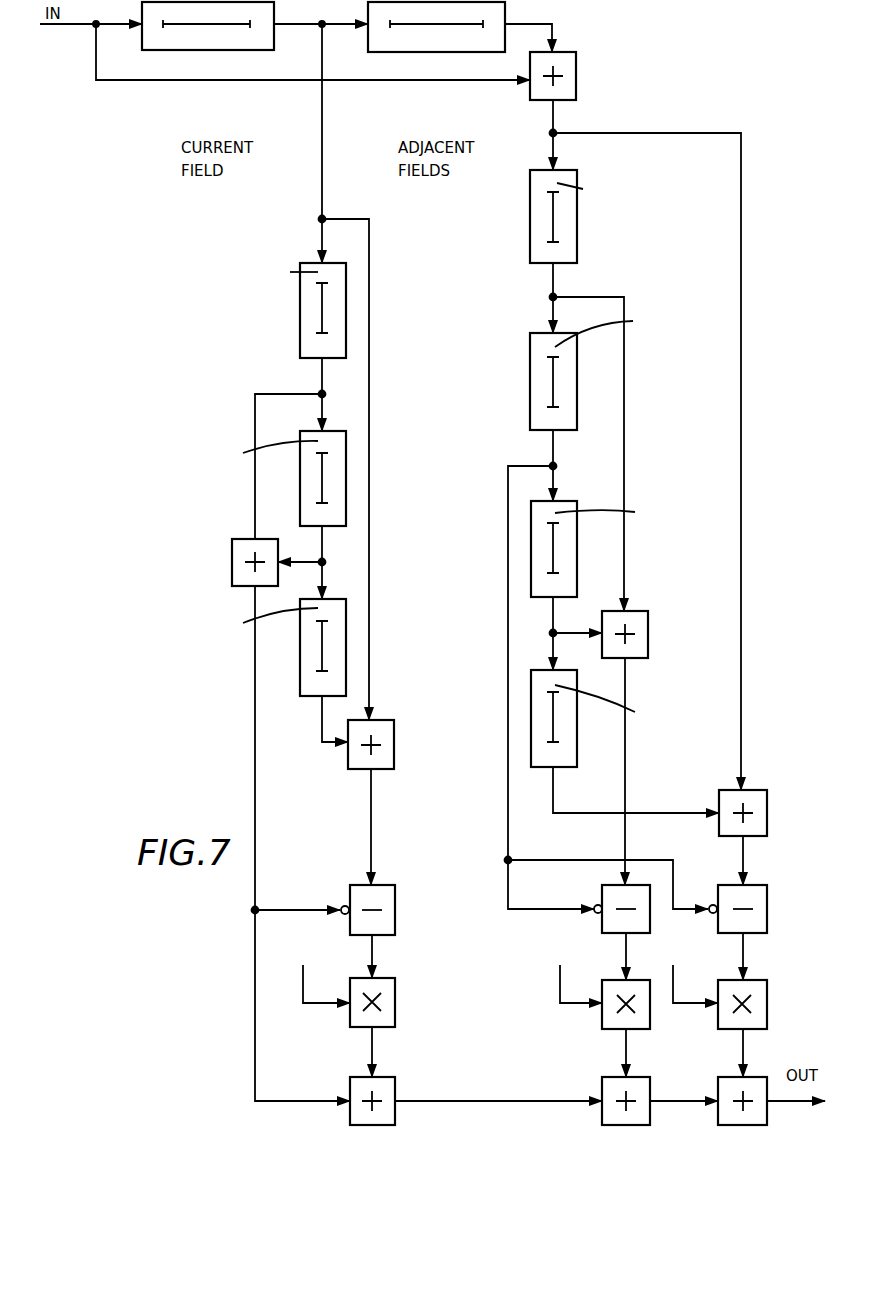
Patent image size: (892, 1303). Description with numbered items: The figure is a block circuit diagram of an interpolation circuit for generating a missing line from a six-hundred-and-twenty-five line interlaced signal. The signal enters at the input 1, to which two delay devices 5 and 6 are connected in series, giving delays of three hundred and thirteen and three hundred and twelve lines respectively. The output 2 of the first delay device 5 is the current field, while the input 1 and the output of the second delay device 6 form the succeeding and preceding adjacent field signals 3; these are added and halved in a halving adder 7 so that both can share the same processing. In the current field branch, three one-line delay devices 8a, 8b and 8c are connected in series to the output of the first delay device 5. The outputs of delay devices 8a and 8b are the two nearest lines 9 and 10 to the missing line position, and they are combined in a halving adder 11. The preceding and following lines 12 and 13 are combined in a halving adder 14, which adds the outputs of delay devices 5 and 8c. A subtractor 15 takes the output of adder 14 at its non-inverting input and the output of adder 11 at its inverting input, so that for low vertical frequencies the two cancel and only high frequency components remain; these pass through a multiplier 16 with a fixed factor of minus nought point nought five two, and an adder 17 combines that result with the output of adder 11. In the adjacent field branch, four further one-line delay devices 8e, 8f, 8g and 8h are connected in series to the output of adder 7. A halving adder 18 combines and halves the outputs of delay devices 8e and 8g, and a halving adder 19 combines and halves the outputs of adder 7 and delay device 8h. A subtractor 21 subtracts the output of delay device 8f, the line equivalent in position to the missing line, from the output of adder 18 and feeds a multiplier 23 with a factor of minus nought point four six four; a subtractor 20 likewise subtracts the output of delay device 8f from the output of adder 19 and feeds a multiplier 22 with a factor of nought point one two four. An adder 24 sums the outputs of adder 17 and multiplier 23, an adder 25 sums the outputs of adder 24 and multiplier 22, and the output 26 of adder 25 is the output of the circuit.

The input 1 is at (84, 30).
The output of the first delay device 2 is at (318, 155).
The adjacent field signals 3 is at (522, 32).
The first delay device 5 is at (160, 52).
The second delay device 6 is at (410, 52).
The halving adder 7 is at (578, 70).
The one-line delay device 8a is at (300, 308).
The one-line delay device 8b is at (300, 485).
The one-line delay device 8c is at (300, 672).
The one-line delay device 8e is at (578, 243).
The one-line delay device 8f is at (578, 390).
The one-line delay device 8g is at (578, 567).
The one-line delay device 8h is at (578, 760).
The nearest line 9 is at (322, 369).
The nearest line 10 is at (325, 552).
The halving adder 11 is at (231, 566).
The preceding line 12 is at (372, 240).
The following line 13 is at (318, 708).
The halving adder 14 is at (348, 762).
The subtractor 15 is at (350, 885).
The multiplier 16 is at (350, 1018).
The adder 17 is at (350, 1122).
The halving adder 18 is at (650, 632).
The halving adder 19 is at (768, 788).
The subtractor 20 is at (768, 898).
The subtractor 21 is at (602, 893).
The multiplier 22 is at (768, 985).
The multiplier 23 is at (650, 1018).
The adder 24 is at (648, 1128).
The adder 25 is at (757, 1128).
The output 26 is at (785, 1103).